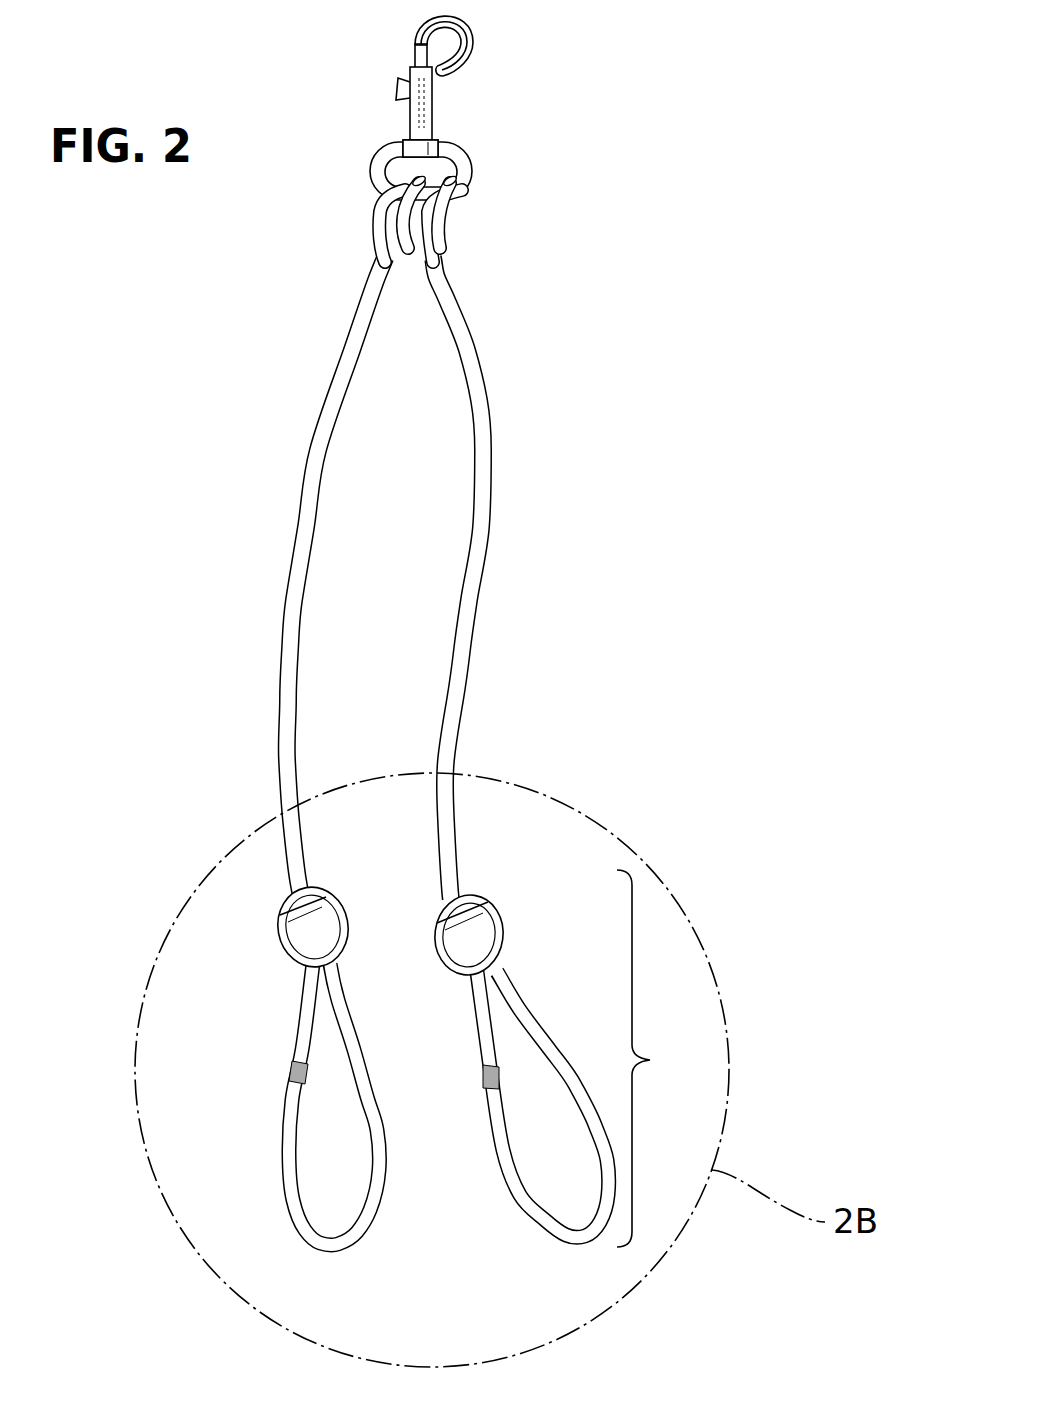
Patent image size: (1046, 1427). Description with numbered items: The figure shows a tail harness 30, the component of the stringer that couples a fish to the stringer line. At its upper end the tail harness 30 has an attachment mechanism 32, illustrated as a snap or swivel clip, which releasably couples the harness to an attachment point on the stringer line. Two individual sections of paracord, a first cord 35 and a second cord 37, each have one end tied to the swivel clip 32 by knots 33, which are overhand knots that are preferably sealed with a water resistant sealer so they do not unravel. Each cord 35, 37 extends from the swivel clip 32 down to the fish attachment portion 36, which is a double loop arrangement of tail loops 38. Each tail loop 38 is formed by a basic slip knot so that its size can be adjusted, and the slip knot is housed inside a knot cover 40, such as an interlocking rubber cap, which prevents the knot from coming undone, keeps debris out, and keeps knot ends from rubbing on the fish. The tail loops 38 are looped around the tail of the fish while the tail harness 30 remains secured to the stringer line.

The tail harness 30 is at (582, 332).
The attachment mechanism 32 is at (447, 72).
The knots 33 is at (385, 216).
The cord 35 is at (470, 616).
The fish attachment portion 36 is at (649, 1058).
The cord 37 is at (295, 592).
The tail loop 38 is at (373, 1107).
The knot cover 40 is at (308, 928).